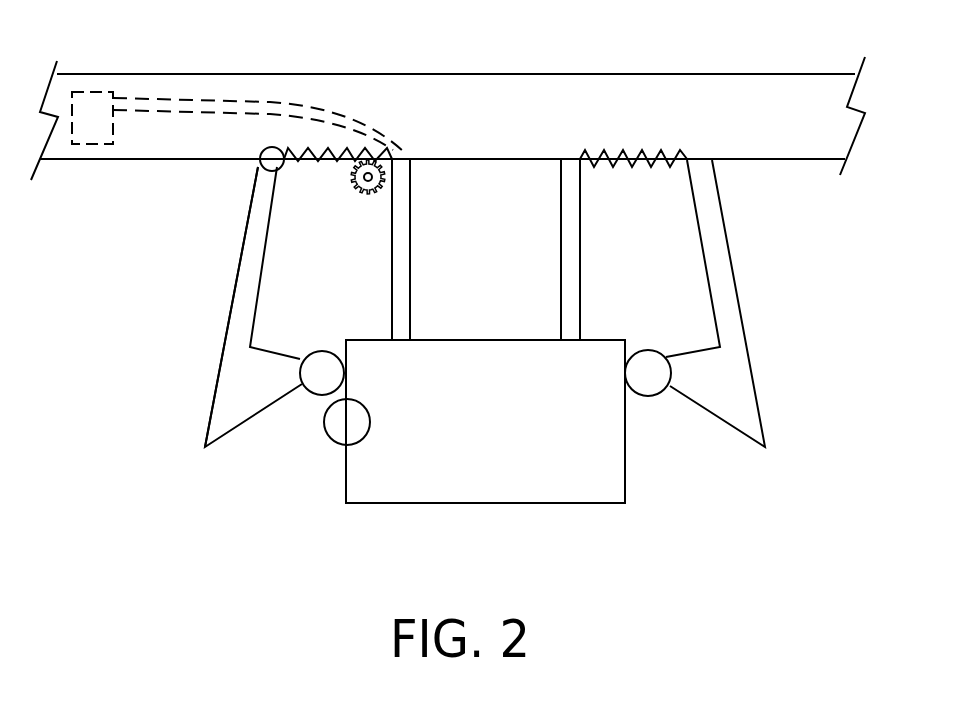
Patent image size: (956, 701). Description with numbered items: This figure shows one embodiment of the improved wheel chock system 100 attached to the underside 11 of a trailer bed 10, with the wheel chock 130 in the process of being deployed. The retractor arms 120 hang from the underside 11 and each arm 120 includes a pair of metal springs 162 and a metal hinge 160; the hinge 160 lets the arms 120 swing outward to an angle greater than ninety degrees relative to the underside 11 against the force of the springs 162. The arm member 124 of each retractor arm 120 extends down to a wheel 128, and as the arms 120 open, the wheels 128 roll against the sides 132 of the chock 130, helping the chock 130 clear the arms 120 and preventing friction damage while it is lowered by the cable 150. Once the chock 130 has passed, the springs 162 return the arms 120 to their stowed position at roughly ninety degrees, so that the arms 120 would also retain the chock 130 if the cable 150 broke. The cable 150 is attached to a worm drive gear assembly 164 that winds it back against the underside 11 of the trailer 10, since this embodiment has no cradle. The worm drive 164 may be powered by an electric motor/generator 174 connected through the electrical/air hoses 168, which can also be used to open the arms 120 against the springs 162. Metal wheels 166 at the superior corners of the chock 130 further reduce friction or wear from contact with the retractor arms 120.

The trailer bed 10 is at (482, 117).
The underside 11 is at (197, 162).
The improved wheel chock system 100 is at (387, 485).
The retractor arms 120 is at (208, 408).
The arm member 124 is at (237, 300).
The wheels 128 is at (652, 373).
The wheel chock 130 is at (505, 441).
The sides 132 is at (343, 472).
The cable 150 is at (570, 200).
The metal hinge 160 is at (272, 150).
The metal springs 162 is at (348, 157).
The worm drive gear assembly 164 is at (355, 184).
The metal wheels 166 is at (330, 442).
The electrical/air hoses 168 is at (178, 100).
The electric motor/generator 174 is at (92, 92).